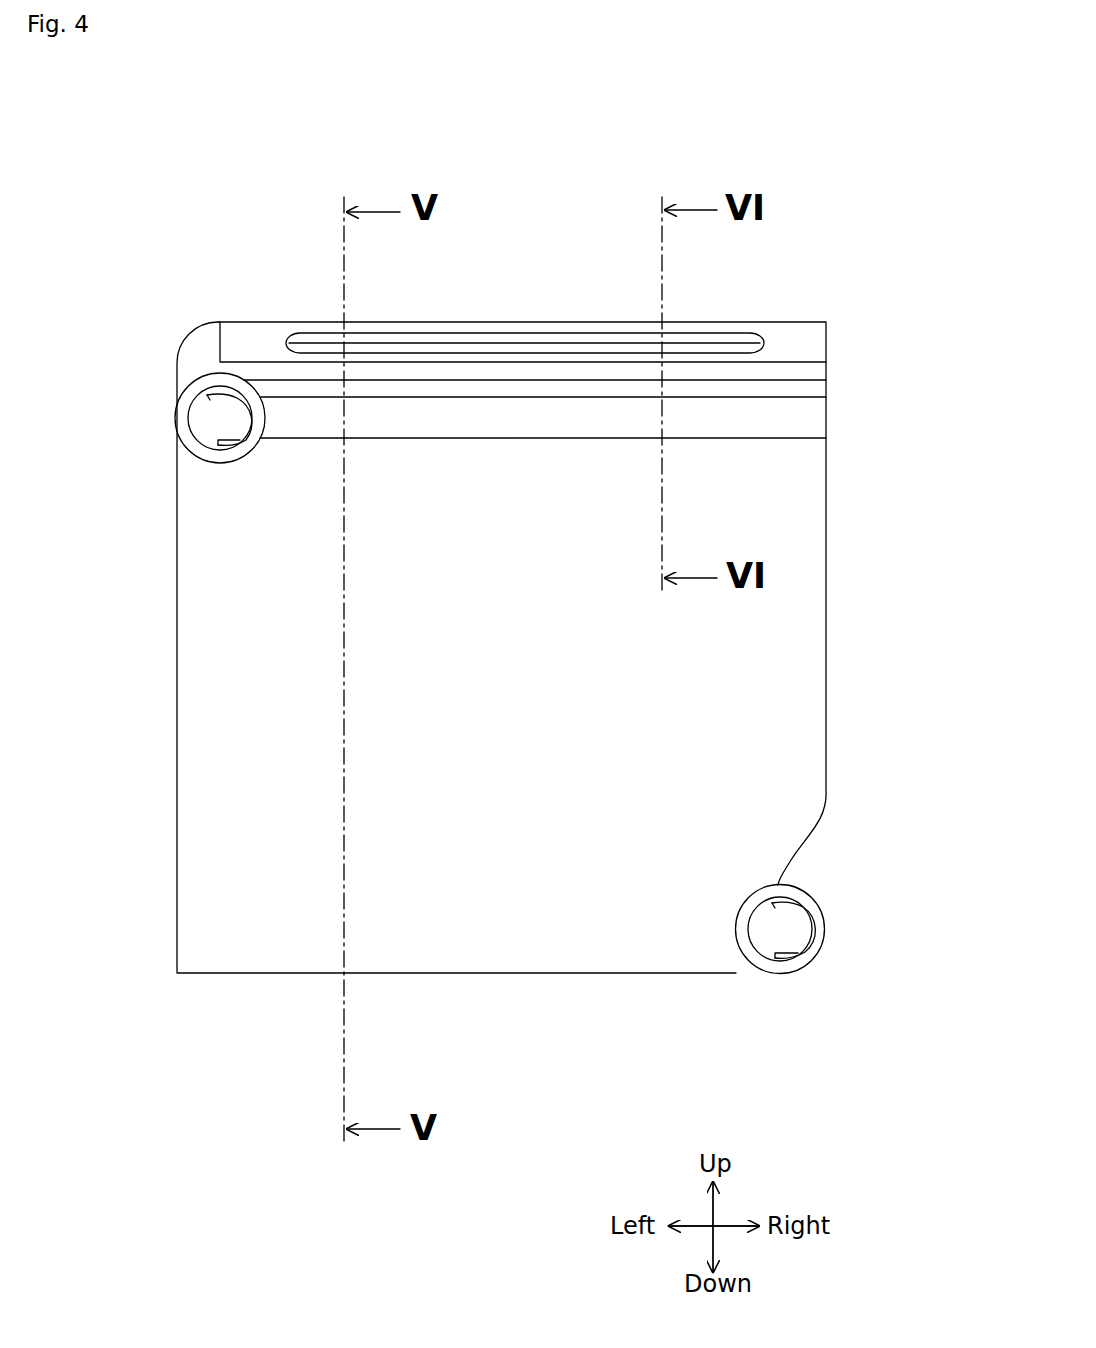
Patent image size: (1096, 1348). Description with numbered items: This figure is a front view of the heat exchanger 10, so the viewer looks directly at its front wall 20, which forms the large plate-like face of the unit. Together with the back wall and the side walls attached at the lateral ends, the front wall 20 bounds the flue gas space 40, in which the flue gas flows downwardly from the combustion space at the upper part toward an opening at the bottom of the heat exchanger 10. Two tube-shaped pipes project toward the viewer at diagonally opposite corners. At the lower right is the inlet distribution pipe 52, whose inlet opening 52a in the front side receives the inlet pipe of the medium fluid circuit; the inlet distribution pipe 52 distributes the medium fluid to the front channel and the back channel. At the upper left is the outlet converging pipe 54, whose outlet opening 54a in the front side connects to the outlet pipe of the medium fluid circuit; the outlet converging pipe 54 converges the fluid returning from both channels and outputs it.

The heat exchanger 10 is at (521, 620).
The front wall 20 is at (505, 935).
The flue gas space 40 is at (497, 344).
The inlet distribution pipe 52 is at (828, 987).
The inlet opening 52a is at (781, 936).
The outlet converging pipe 54 is at (194, 440).
The outlet opening 54a is at (205, 410).